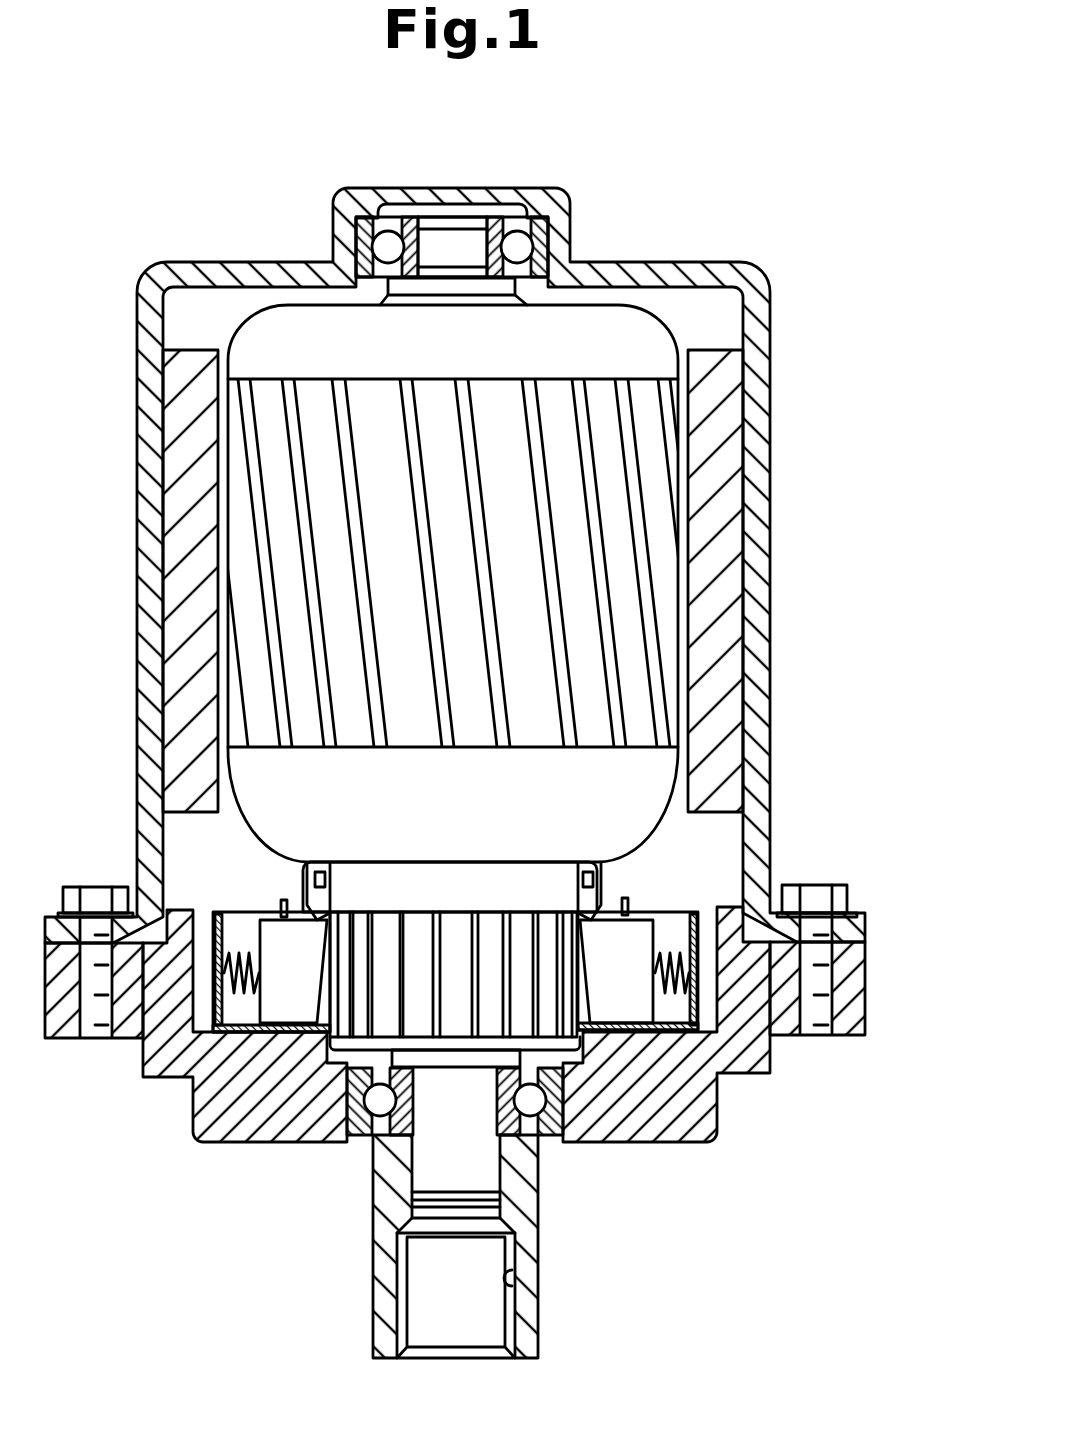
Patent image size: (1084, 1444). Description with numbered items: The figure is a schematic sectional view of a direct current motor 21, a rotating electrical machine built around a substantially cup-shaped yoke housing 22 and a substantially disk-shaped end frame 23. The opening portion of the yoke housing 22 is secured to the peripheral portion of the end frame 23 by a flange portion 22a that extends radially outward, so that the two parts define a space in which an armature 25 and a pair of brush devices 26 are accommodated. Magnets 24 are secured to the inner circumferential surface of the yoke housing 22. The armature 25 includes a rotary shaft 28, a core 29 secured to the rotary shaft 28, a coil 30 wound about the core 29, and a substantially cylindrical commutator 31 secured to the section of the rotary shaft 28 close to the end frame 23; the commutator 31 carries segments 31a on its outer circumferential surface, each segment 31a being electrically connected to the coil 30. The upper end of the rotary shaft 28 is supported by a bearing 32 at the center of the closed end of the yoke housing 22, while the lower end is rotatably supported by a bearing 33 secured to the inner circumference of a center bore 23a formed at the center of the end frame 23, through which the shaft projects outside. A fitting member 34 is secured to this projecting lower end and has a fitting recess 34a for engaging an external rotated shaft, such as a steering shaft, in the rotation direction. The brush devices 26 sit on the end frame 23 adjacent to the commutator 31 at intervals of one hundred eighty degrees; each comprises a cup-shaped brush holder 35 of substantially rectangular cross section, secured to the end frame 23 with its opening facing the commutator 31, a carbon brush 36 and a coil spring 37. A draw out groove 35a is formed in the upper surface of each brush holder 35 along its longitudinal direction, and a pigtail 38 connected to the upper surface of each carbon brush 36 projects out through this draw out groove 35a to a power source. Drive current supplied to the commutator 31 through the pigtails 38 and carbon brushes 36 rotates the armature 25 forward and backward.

The direct current motor 21 is at (851, 142).
The yoke housing 22 is at (770, 405).
The flange portion 22a is at (865, 926).
The end frame 23 is at (200, 1135).
The center bore 23a is at (355, 1125).
The magnets 24 is at (165, 560).
The armature 25 is at (662, 300).
The brush devices 26 is at (210, 896).
The rotary shaft 28 is at (448, 233).
The core 29 is at (640, 633).
The coil 30 is at (670, 775).
The commutator 31 is at (455, 920).
The segments 31a is at (519, 916).
The bearing 32 is at (533, 240).
The bearing 33 is at (552, 1123).
The fitting member 34 is at (380, 1225).
The fitting recess 34a is at (512, 1278).
The brush holder 35 is at (240, 1032).
The draw out groove 35a is at (245, 912).
The carbon brush 36 is at (322, 905).
The coil spring 37 is at (261, 975).
The pigtail 38 is at (282, 902).